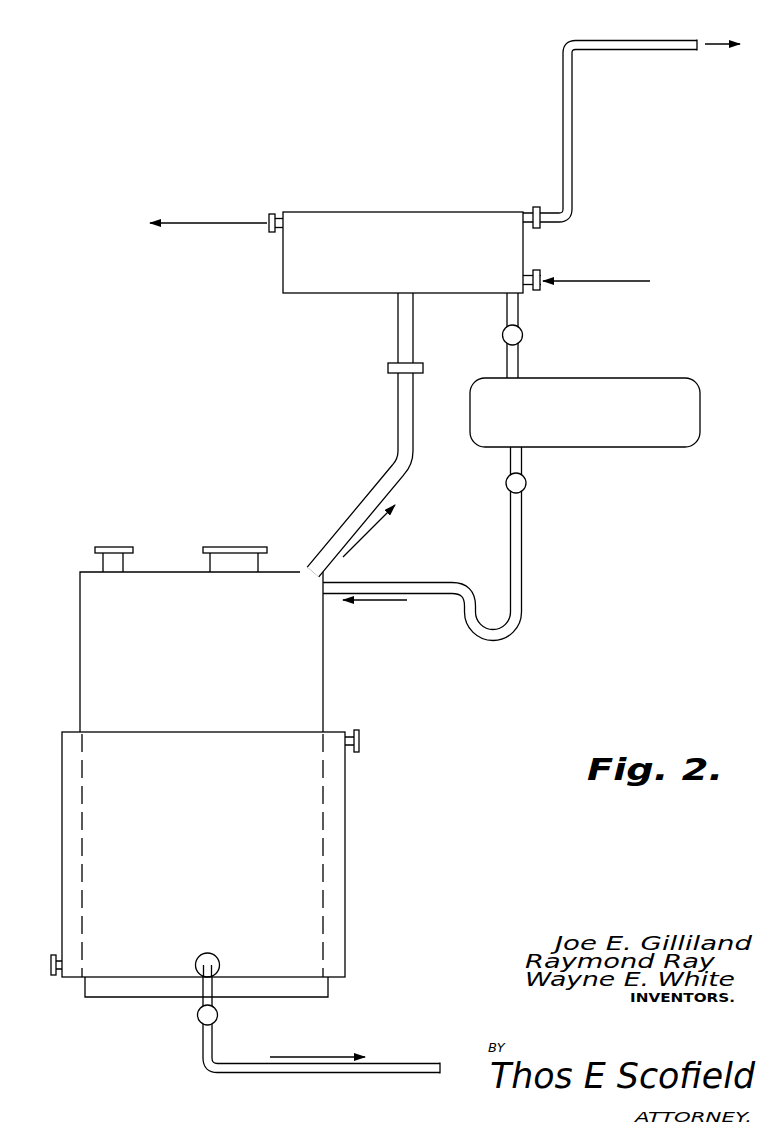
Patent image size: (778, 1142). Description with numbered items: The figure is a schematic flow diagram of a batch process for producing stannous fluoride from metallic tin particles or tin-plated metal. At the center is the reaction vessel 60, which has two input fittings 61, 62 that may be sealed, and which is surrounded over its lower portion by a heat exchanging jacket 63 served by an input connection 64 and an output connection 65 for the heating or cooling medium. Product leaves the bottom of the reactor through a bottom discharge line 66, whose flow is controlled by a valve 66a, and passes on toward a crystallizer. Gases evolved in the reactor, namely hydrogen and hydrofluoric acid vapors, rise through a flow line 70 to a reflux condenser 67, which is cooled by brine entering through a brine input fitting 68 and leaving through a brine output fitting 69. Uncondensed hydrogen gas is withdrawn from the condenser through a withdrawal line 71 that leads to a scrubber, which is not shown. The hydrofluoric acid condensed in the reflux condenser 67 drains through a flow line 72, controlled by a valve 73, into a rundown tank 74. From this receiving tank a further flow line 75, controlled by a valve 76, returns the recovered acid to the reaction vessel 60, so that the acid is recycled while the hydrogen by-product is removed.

The reaction vessel 60 is at (92, 636).
The input fitting 61 is at (128, 547).
The input fitting 62 is at (232, 547).
The heat exchanging jacket 63 is at (66, 789).
The input connection 64 is at (50, 977).
The output connection 65 is at (361, 741).
The bottom discharge line 66 is at (200, 996).
The valve 66a is at (218, 1015).
The reflux condenser 67 is at (351, 213).
The brine input fitting 68 is at (534, 272).
The brine output fitting 69 is at (212, 228).
The flow line 70 is at (398, 402).
The withdrawal line 71 is at (572, 129).
The flow line 72 is at (520, 364).
The valve 73 is at (523, 336).
The rundown tank 74 is at (625, 379).
The flow line 75 is at (522, 588).
The valve 76 is at (526, 484).